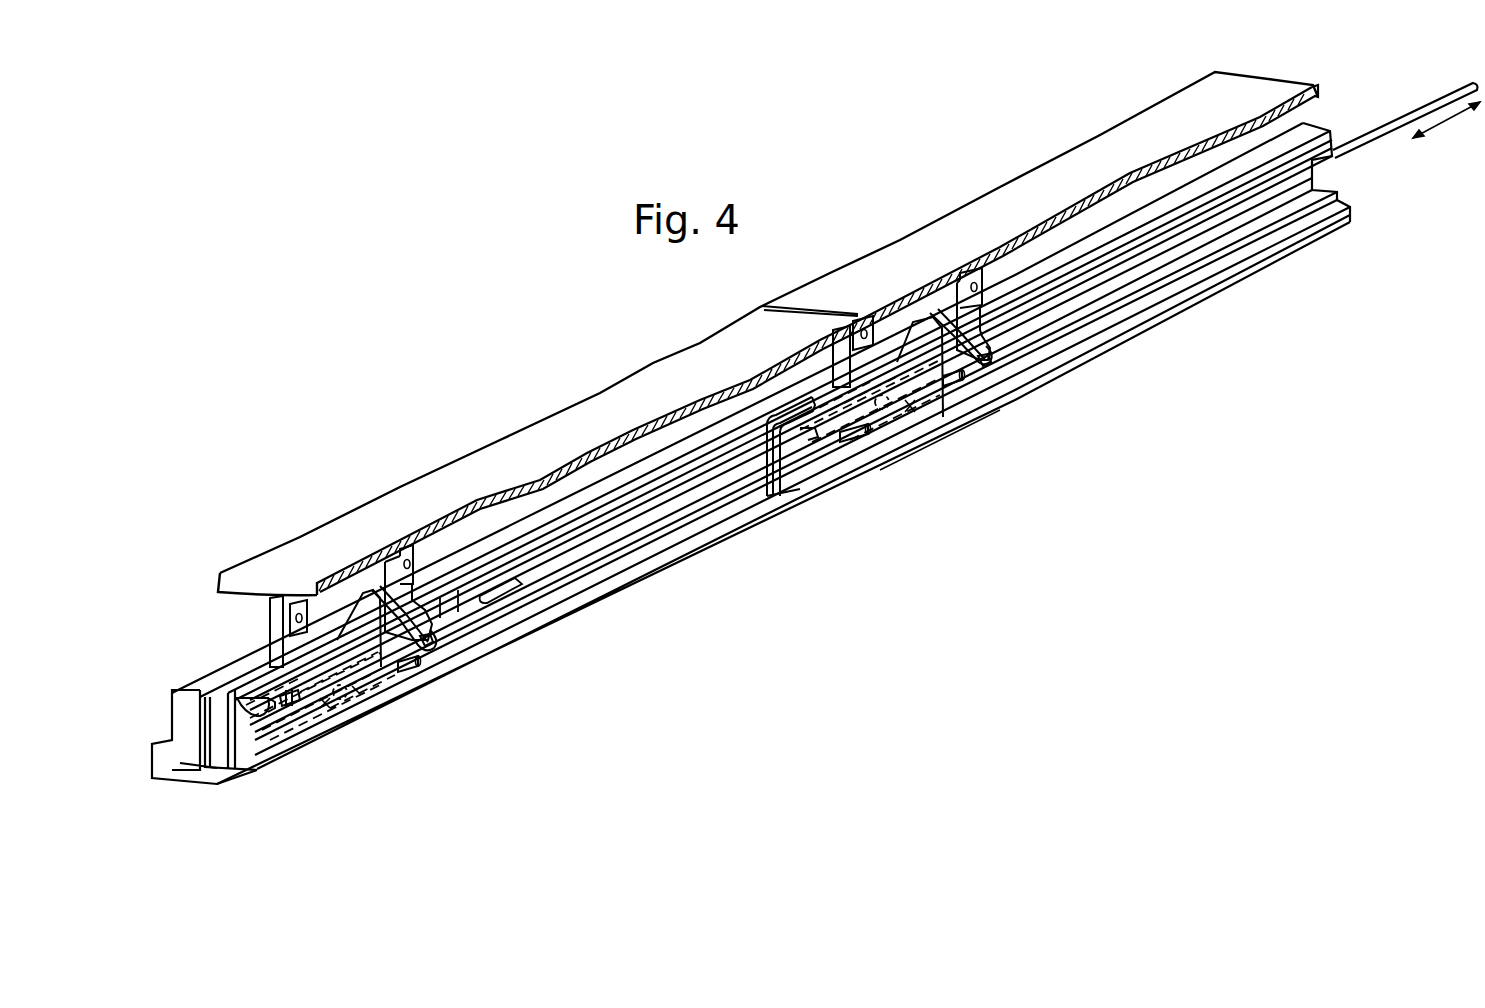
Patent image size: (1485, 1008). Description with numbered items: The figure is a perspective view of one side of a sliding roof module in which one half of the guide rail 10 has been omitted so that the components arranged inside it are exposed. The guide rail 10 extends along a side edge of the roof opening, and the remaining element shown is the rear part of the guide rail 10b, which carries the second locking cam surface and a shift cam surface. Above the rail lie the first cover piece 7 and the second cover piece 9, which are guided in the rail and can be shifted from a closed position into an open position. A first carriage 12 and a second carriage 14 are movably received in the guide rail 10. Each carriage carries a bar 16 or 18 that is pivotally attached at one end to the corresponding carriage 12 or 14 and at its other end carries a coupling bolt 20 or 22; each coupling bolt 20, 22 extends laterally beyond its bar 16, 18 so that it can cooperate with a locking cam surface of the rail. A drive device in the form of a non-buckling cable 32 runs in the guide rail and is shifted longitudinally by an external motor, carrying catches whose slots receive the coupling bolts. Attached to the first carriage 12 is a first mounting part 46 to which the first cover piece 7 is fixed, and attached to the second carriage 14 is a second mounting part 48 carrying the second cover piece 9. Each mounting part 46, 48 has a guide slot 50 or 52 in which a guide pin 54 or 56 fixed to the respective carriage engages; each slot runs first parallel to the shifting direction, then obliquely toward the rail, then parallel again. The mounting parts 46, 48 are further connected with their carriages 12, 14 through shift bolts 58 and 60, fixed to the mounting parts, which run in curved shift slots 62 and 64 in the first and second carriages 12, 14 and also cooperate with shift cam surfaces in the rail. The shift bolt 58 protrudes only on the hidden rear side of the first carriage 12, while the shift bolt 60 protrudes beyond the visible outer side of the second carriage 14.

The first cover piece 7 is at (667, 368).
The second cover piece 9 is at (1073, 156).
The guide rail 10 is at (619, 606).
The rear part of the guide rail 10b is at (170, 780).
The first carriage 12 is at (257, 770).
The second carriage 14 is at (905, 447).
The bar 16 is at (352, 723).
The bar 18 is at (932, 436).
The coupling bolt 20 is at (413, 672).
The coupling bolt 22 is at (958, 386).
The non-buckling cable 32 is at (1432, 100).
The first mounting part 46 is at (384, 570).
The second mounting part 48 is at (950, 296).
The guide slot 50 is at (430, 652).
The guide slot 52 is at (985, 366).
The guide pin 54 is at (374, 589).
The guide pin 56 is at (938, 310).
The shift bolt 58 is at (297, 704).
The shift bolt 60 is at (858, 442).
The shift slot 62 is at (246, 696).
The shift slot 64 is at (788, 465).